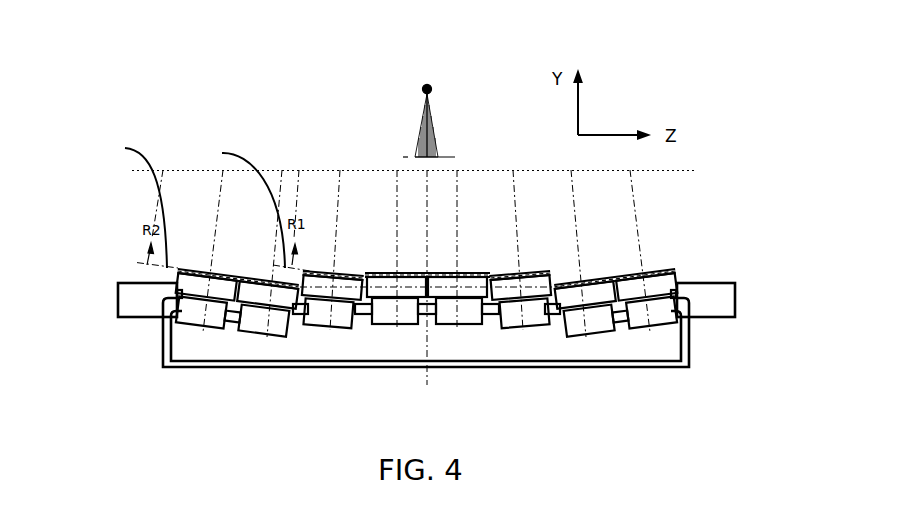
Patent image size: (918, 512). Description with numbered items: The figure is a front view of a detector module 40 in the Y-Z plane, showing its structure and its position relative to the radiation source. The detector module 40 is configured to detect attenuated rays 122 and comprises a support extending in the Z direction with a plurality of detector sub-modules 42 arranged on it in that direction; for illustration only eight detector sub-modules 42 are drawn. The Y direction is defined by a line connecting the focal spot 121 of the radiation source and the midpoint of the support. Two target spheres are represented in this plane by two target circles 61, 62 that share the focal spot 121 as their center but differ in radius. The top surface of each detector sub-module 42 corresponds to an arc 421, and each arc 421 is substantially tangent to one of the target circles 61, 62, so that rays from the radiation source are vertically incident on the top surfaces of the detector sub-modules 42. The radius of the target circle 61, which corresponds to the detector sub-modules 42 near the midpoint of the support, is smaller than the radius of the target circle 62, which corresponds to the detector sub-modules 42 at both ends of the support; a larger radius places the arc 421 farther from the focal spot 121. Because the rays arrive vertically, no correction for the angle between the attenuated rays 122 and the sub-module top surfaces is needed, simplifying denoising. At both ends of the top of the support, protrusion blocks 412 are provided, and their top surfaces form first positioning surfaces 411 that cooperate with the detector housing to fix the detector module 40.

The detector module 40 is at (109, 274).
The first positioning surface 411 is at (703, 282).
The protrusion block 412 is at (707, 302).
The detector sub-module 42 is at (645, 272).
The arc 421 is at (588, 277).
The target circle 61 is at (240, 206).
The target circle 62 is at (132, 205).
The focal spot 121 is at (425, 83).
The attenuated rays 122 is at (418, 148).